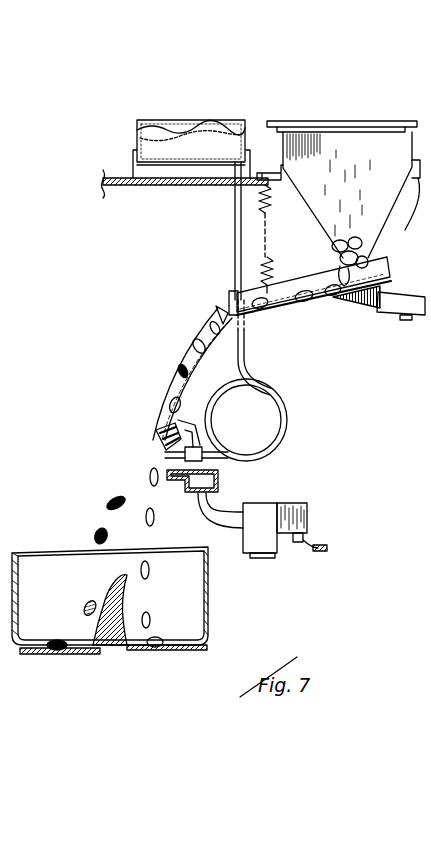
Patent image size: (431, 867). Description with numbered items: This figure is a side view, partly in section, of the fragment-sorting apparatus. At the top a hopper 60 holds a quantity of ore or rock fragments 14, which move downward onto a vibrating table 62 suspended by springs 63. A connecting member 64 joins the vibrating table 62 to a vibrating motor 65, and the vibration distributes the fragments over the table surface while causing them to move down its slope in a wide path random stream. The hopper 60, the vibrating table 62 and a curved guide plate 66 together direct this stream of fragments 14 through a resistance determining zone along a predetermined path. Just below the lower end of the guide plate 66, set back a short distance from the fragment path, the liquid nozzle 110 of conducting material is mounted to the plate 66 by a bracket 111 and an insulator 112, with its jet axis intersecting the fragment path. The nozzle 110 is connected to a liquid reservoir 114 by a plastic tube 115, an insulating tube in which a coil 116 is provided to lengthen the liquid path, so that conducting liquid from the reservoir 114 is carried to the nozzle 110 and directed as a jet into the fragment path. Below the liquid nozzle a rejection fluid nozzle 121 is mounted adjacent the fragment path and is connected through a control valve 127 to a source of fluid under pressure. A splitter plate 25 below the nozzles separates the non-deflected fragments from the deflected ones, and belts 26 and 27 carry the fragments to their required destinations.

The rock fragments 14 is at (196, 346).
The splitter plate 25 is at (126, 598).
The belt 26 is at (180, 652).
The belt 27 is at (72, 658).
The hopper 60 is at (402, 152).
The vibrating table 62 is at (276, 308).
The springs 63 is at (273, 235).
The connecting member 64 is at (360, 304).
The vibrating motor 65 is at (410, 319).
The guide plate 66 is at (186, 380).
The liquid nozzle 110 is at (165, 455).
The bracket 111 is at (225, 458).
The insulator 112 is at (155, 424).
The liquid reservoir 114 is at (136, 154).
The plastic tube 115 is at (233, 240).
The coil 116 is at (258, 429).
The fluid nozzle 121 is at (222, 480).
The control valve 127 is at (263, 515).